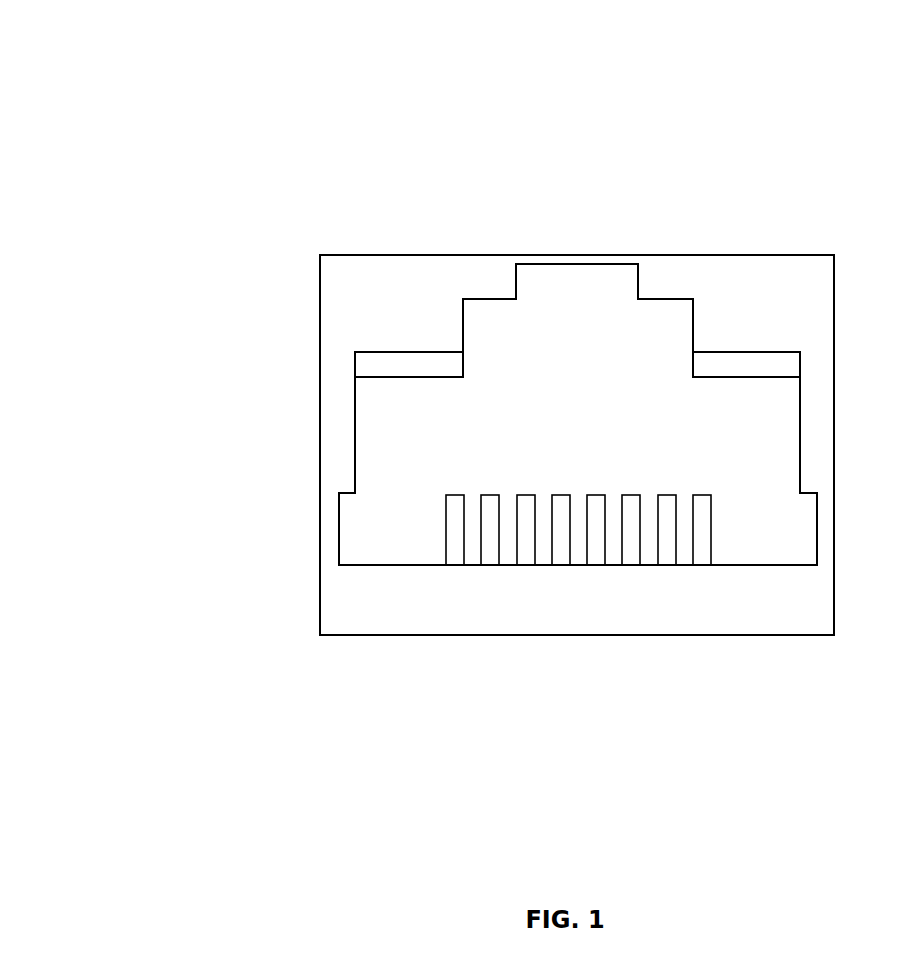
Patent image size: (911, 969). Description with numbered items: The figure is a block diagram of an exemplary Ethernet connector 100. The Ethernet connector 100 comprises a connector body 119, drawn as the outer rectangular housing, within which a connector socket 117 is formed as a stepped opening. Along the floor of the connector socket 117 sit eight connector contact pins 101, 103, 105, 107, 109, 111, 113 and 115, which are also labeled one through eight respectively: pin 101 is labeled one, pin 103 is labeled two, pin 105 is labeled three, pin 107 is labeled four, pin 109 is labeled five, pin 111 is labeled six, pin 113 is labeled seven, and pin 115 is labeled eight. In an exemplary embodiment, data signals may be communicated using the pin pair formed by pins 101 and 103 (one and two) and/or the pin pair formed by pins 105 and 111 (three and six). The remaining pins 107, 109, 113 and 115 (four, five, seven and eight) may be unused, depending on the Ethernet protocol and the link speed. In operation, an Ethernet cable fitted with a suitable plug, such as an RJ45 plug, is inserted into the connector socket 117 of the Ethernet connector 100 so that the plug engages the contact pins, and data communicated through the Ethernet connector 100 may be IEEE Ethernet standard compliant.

The Ethernet connector 100 is at (96, 93).
The connector contact pin 101 is at (700, 495).
The connector contact pin 103 is at (665, 495).
The connector contact pin 105 is at (629, 495).
The connector contact pin 107 is at (594, 495).
The connector contact pin 109 is at (559, 495).
The connector contact pin 111 is at (524, 495).
The connector contact pin 113 is at (488, 495).
The connector contact pin 115 is at (453, 495).
The connector socket 117 is at (800, 402).
The connector body 119 is at (731, 256).